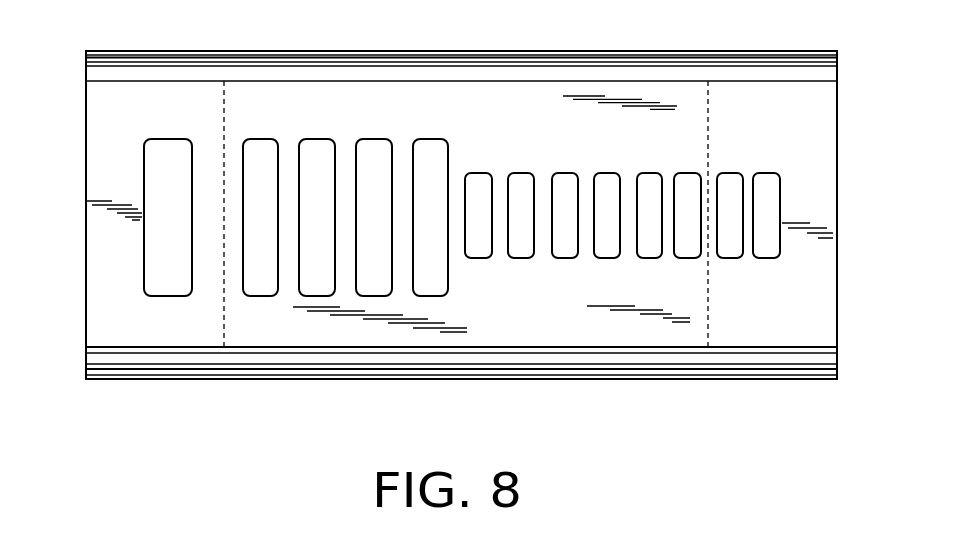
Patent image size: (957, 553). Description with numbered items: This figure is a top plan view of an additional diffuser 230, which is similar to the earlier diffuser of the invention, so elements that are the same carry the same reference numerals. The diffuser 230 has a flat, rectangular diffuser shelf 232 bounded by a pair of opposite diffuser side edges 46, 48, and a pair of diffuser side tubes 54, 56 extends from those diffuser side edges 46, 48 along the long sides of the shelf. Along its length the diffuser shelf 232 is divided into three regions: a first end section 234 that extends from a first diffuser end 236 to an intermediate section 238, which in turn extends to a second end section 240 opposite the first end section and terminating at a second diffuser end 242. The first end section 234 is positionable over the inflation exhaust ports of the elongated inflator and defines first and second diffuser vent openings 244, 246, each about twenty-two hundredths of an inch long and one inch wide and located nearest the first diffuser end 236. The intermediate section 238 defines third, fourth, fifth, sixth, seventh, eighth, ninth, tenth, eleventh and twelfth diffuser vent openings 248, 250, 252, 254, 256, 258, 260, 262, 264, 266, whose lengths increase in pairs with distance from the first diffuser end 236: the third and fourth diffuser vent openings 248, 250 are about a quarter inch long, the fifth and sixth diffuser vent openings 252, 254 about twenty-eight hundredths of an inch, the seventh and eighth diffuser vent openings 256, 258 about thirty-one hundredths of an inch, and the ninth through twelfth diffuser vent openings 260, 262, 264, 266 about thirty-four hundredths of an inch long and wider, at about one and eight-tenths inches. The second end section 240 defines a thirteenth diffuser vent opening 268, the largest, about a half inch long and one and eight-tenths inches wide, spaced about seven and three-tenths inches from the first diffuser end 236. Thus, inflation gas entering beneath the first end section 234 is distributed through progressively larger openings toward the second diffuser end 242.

The diffuser 230 is at (596, 391).
The diffuser shelf 232 is at (565, 337).
The first end section 234 is at (741, 345).
The first diffuser end 236 is at (837, 255).
The intermediate section 238 is at (382, 338).
The second end section 240 is at (132, 338).
The second diffuser end 242 is at (85, 270).
The first diffuser vent opening 244 is at (765, 259).
The second diffuser vent opening 246 is at (732, 173).
The third diffuser vent opening 248 is at (688, 259).
The fourth diffuser vent opening 250 is at (645, 173).
The fifth diffuser vent opening 252 is at (608, 259).
The sixth diffuser vent opening 254 is at (560, 173).
The seventh diffuser vent opening 256 is at (523, 259).
The eighth diffuser vent opening 258 is at (480, 173).
The ninth diffuser vent opening 260 is at (430, 138).
The tenth diffuser vent opening 262 is at (373, 138).
The eleventh diffuser vent opening 264 is at (315, 138).
The twelfth diffuser vent opening 266 is at (255, 138).
The thirteenth diffuser vent opening 268 is at (170, 125).
The diffuser side edge 46 is at (242, 338).
The diffuser side edge 48 is at (303, 85).
The diffuser side tube 54 is at (273, 378).
The diffuser side tube 56 is at (440, 50).